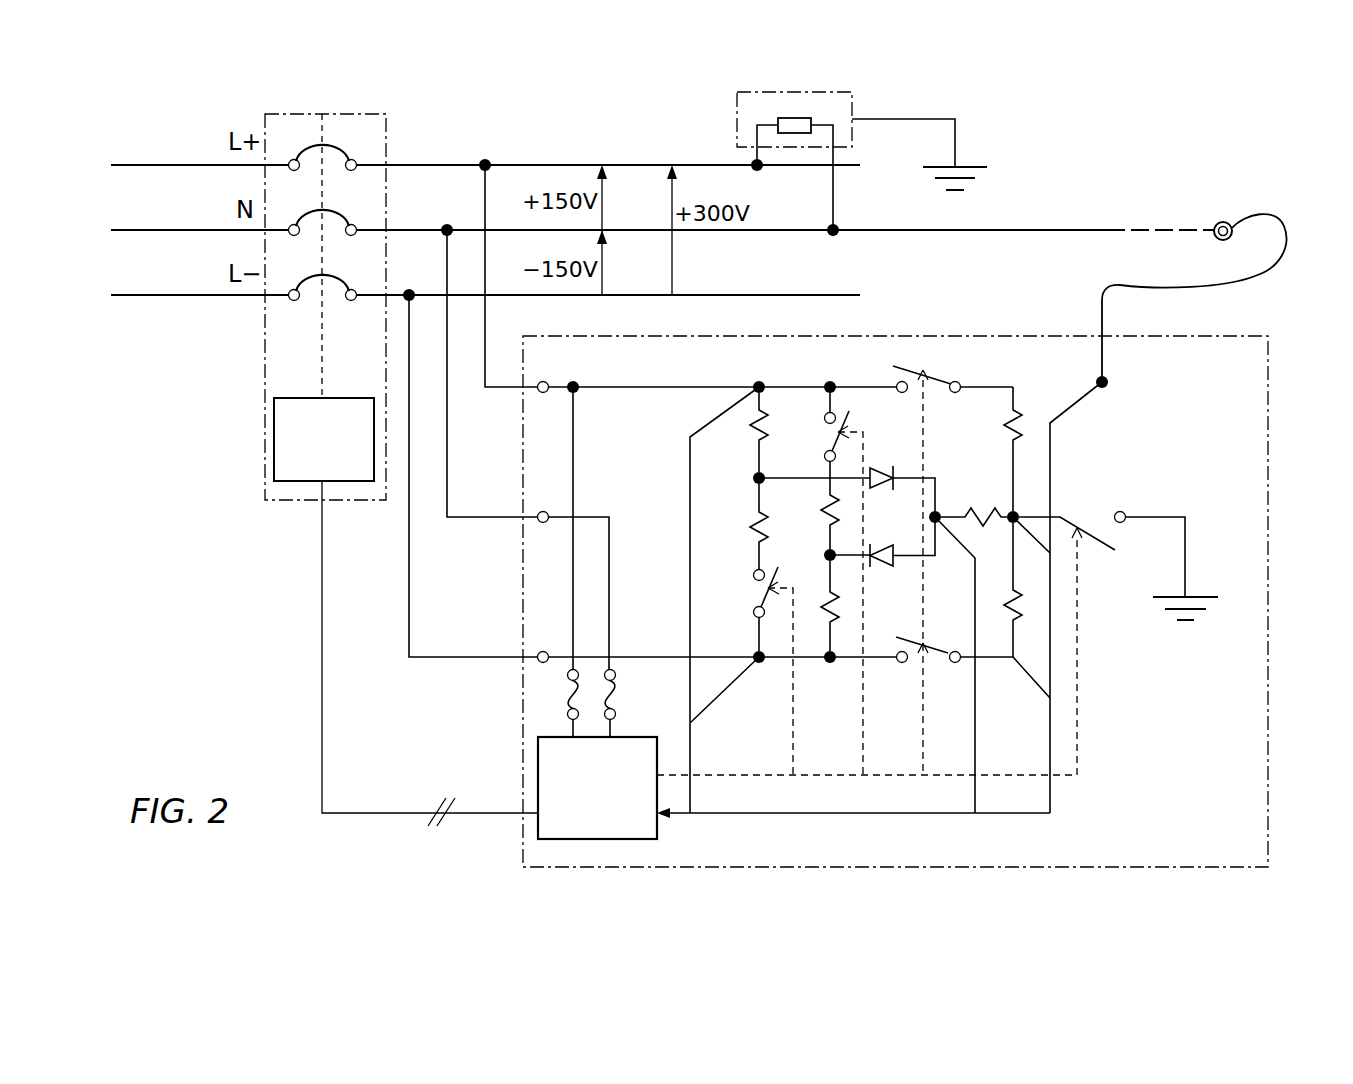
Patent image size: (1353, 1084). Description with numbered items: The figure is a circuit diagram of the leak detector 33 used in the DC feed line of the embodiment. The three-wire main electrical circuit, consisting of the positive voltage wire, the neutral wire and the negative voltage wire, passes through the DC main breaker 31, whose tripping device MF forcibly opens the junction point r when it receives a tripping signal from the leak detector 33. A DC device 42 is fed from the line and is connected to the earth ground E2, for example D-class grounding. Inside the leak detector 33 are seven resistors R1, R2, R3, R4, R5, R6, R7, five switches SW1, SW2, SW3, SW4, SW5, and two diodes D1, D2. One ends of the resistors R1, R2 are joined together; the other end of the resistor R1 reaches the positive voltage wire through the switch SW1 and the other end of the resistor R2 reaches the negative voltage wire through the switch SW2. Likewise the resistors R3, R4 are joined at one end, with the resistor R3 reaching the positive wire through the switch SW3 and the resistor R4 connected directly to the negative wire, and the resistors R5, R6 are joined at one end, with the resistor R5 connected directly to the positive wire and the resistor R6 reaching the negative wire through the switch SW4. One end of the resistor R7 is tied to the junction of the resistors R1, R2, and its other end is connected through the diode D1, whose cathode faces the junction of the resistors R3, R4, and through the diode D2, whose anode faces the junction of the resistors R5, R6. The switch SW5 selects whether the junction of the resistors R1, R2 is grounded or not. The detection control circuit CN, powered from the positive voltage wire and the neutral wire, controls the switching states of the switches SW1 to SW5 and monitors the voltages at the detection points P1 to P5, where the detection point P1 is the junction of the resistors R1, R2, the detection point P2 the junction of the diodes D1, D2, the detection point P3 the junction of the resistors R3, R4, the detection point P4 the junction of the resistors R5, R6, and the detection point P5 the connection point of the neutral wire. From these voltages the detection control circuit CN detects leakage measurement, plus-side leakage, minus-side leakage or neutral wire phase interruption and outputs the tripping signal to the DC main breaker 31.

The DC main breaker 31 is at (278, 351).
The junction point r is at (354, 144).
The tripping device MF is at (274, 447).
The DC device 42 is at (813, 121).
The earth ground E2 is at (974, 182).
The leak detector 33 is at (1268, 816).
The detection control circuit CN is at (543, 828).
The switch SW1 is at (935, 560).
The switch SW2 is at (938, 638).
The switch SW3 is at (866, 584).
The switch SW4 is at (746, 671).
The switch SW5 is at (1118, 630).
The resistor R1 is at (993, 449).
The resistor R2 is at (1013, 610).
The resistor R3 is at (814, 506).
The resistor R4 is at (817, 606).
The resistor R5 is at (778, 432).
The resistor R6 is at (738, 526).
The resistor R7 is at (976, 498).
The diode D1 is at (902, 542).
The diode D2 is at (902, 478).
The detection point P1 is at (1016, 513).
The detection point P2 is at (938, 513).
The detection point P3 is at (826, 554).
The detection point P4 is at (755, 479).
The detection point P5 is at (1108, 380).